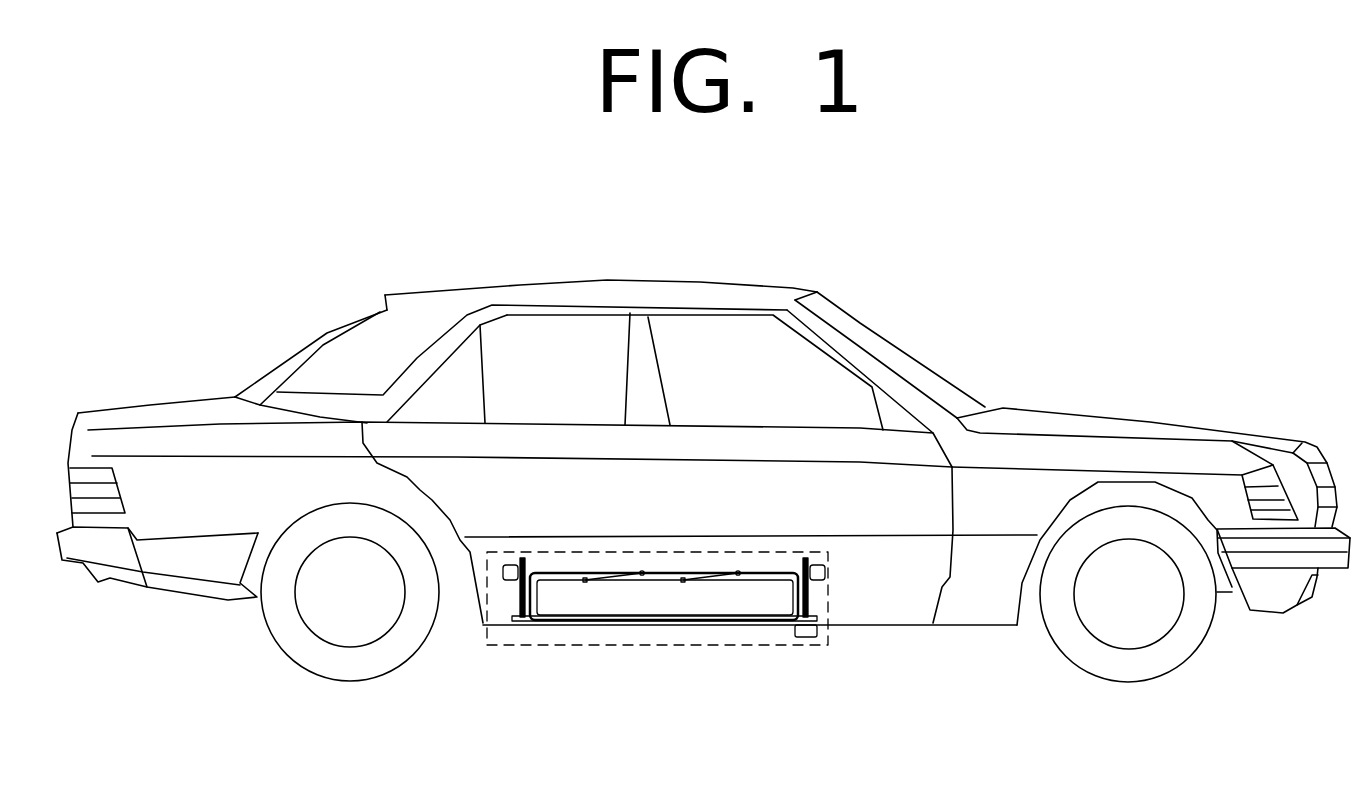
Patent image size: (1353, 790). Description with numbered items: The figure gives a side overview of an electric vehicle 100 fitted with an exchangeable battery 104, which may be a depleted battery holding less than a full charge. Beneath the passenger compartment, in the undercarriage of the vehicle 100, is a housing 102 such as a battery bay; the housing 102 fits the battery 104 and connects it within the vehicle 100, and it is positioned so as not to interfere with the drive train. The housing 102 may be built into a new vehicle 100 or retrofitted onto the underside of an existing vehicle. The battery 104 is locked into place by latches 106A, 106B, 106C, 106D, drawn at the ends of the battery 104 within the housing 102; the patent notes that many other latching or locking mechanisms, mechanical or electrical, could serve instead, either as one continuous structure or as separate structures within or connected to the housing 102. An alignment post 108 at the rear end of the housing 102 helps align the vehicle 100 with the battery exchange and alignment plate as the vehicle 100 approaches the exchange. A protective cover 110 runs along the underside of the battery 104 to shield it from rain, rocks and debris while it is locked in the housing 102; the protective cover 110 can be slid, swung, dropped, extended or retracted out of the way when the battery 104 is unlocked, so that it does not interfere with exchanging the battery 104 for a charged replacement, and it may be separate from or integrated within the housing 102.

The electric vehicle 100 is at (282, 363).
The housing 102 is at (517, 645).
The exchangeable battery 104 is at (678, 600).
The latch 106A is at (510, 560).
The latch 106B is at (859, 554).
The latch 106C is at (520, 563).
The latch 106D is at (805, 562).
The alignment post 108 is at (820, 630).
The protective cover 110 is at (550, 620).